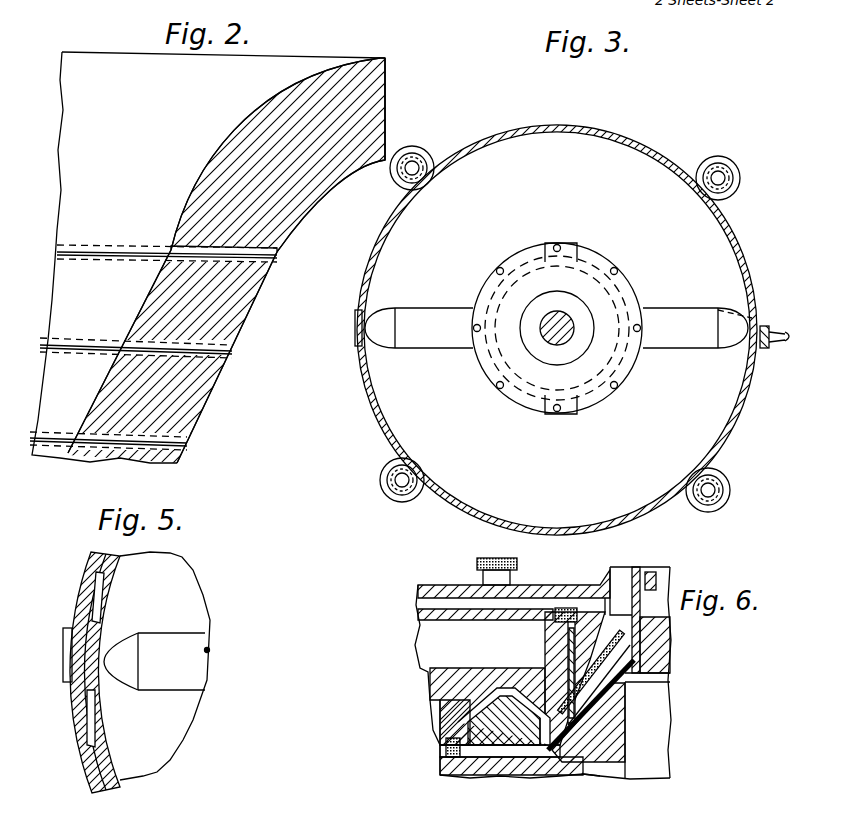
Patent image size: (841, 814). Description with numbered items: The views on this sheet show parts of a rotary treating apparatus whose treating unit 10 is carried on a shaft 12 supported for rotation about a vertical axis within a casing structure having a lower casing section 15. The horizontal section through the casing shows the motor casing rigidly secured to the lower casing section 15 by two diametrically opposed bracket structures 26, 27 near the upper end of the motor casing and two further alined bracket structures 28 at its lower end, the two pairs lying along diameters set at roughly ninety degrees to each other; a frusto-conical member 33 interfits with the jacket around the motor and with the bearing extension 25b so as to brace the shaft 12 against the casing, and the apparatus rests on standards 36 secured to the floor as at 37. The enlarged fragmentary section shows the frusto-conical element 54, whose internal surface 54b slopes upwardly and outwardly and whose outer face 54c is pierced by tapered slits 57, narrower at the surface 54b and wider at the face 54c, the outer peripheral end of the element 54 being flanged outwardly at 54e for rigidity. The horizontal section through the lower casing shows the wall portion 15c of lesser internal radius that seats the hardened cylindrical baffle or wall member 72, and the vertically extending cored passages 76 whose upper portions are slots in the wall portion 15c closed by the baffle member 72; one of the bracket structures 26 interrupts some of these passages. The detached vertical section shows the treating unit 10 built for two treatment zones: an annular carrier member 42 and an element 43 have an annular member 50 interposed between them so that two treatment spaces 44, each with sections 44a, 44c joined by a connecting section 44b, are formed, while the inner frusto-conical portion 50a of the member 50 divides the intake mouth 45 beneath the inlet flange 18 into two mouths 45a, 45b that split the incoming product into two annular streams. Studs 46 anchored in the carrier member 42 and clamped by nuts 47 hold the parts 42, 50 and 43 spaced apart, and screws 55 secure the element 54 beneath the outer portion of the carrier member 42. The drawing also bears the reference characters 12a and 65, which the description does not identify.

In FIG. 6, the treating unit 10 is at (420, 668).
In FIG. 3, the shaft 12 is at (560, 342).
In FIG. 6, the shaft 12 is at (655, 683).
In FIG. 6, the shaft shoulder 12a is at (655, 657).
In FIG. 3, the lower casing section 15 is at (366, 404).
In FIG. 5, the wall portion 15c is at (77, 708).
In FIG. 6, the cylindrical flange 18 is at (625, 598).
In FIG. 6, the bearing extension 25b is at (655, 760).
In FIG. 3, the bracket structure 26 is at (420, 350).
In FIG. 5, the bracket structure 26 is at (152, 686).
In FIG. 3, the bracket structure 27 is at (680, 350).
In FIG. 3, the bracket structures 28 is at (577, 242).
In FIG. 3, the frusto-conical member 33 is at (608, 300).
In FIG. 6, the frusto-conical member 33 is at (580, 780).
In FIG. 3, the standards 36 is at (726, 183).
In FIG. 3, the floor securing points 37 is at (732, 167).
In FIG. 6, the annular carrier member 42 is at (512, 735).
In FIG. 6, the element 43 is at (488, 660).
In FIG. 6, the treatment space 44 is at (478, 700).
In FIG. 6, the treatment space section 44a is at (545, 740).
In FIG. 6, the connecting section 44b is at (555, 625).
In FIG. 6, the treatment space section 44c is at (470, 720).
In FIG. 6, the mouth 45 is at (645, 618).
In FIG. 6, the mouth 45a is at (622, 630).
In FIG. 6, the mouth 45b is at (622, 648).
In FIG. 6, the studs 46 is at (572, 650).
In FIG. 6, the nuts 47 is at (565, 600).
In FIG. 6, the interposed element 50 is at (472, 757).
In FIG. 6, the inner frusto-conical portion 50a is at (668, 674).
In FIG. 2, the element 54 is at (262, 287).
In FIG. 2, the internal surface 54b is at (142, 307).
In FIG. 2, the outer face 54c is at (222, 381).
In FIG. 2, the outward flange 54e is at (388, 76).
In FIG. 6, the screws 55 is at (450, 757).
In FIG. 2, the slits 57 is at (278, 255).
In FIG. 6, the knob 65 is at (508, 546).
In FIG. 5, the baffle member 72 is at (98, 730).
In FIG. 5, the cored passages 76 is at (95, 603).